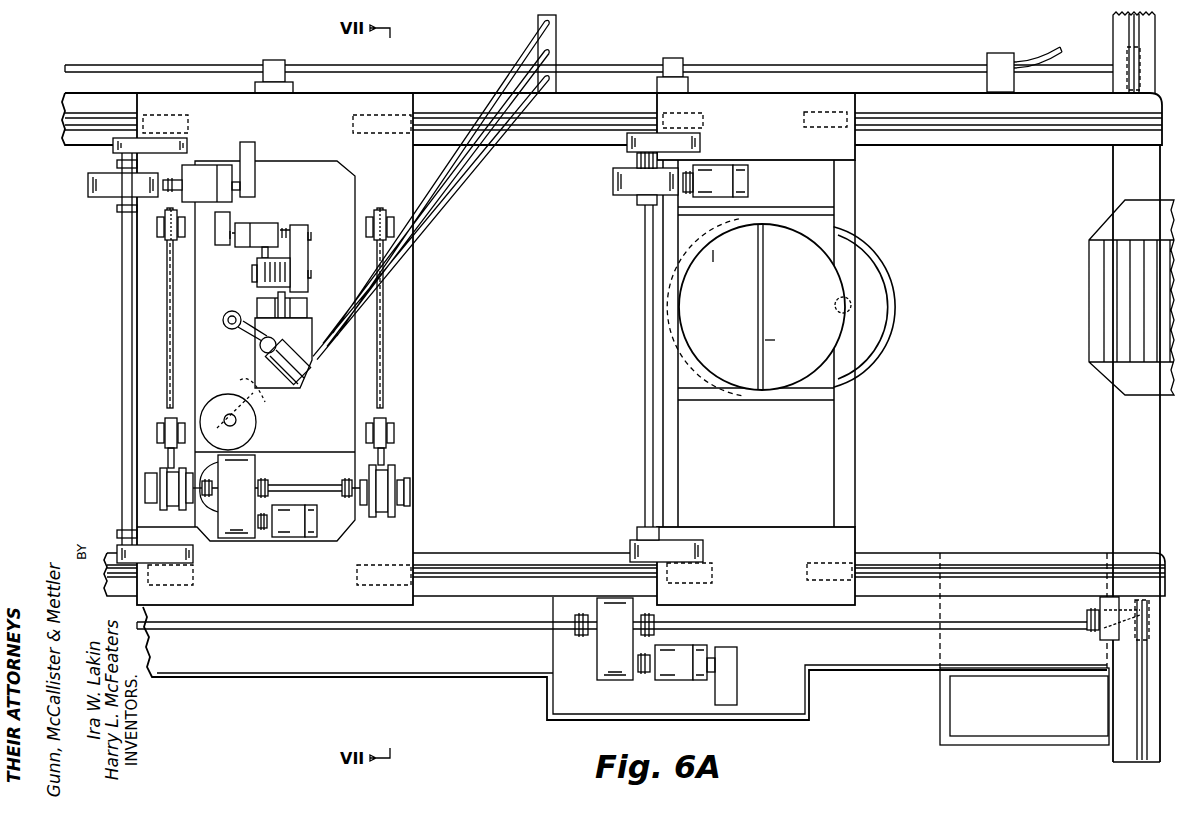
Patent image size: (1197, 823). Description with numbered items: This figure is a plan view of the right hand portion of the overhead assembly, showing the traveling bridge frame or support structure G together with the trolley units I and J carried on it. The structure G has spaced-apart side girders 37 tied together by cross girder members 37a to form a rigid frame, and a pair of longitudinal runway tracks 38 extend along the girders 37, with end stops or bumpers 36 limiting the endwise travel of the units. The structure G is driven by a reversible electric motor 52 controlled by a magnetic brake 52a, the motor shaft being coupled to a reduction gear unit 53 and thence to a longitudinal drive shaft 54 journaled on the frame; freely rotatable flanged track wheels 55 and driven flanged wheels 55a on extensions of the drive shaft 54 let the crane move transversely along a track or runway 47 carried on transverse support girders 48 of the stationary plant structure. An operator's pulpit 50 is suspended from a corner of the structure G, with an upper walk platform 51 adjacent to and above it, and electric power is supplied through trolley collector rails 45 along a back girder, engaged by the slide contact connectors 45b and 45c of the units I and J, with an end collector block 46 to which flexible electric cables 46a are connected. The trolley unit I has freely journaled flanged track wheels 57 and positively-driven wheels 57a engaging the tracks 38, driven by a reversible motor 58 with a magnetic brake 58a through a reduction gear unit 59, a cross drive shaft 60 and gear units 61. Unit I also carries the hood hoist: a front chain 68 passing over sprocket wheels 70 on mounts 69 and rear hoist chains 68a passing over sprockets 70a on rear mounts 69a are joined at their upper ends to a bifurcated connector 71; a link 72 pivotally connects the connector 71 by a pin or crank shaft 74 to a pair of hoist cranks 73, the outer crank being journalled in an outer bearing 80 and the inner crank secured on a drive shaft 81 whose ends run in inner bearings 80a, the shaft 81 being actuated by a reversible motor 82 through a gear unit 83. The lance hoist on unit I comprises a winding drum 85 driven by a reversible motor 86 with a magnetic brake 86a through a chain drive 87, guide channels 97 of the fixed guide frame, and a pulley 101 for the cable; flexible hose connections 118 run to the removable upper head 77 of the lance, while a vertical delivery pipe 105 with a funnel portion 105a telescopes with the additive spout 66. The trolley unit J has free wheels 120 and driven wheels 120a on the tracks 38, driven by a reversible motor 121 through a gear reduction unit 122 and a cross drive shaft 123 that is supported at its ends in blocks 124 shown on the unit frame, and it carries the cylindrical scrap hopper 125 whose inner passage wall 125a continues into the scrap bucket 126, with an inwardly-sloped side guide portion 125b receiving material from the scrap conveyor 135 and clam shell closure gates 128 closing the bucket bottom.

The end stops or bumpers 36 is at (1162, 100).
The girders 37 is at (65, 148).
The cross girder members 37a is at (1113, 456).
The runway tracks 38 is at (543, 135).
The trolley collector rails 45 is at (133, 68).
The electrical slide contact connector 45b is at (283, 62).
The electrical slide contact connector 45c is at (678, 62).
The end collector block 46 is at (993, 55).
The flexible electric cables 46a is at (1043, 57).
The track or runway 47 is at (1128, 28).
The transverse support girders 48 is at (1120, 750).
The operator's pulpit 50 is at (940, 710).
The upper walk platform 51 is at (876, 668).
The reversible electric motor 52 is at (683, 683).
The magnetic brake 52a is at (737, 692).
The reduction gear unit 53 is at (612, 683).
The longitudinal drive shaft 54 is at (433, 630).
The flanged track wheels 55 is at (1127, 55).
The driven flanged wheels 55a is at (1105, 635).
The flanged track wheels 57 is at (353, 118).
The driven flange track wheels 57a is at (190, 116).
The reversible electrical motor 58 is at (208, 170).
The magnetic brake 58a is at (255, 150).
The reduction gear unit 59 is at (88, 197).
The cross drive shaft 60 is at (122, 376).
The gear units or sets 61 is at (113, 150).
The additive spout portion 66 is at (265, 400).
The front chain 68 is at (165, 453).
The rear hoist chains 68a is at (167, 298).
The mounts 69 is at (366, 430).
The rear mounts 69a is at (366, 226).
The sprocket wheels 70 is at (394, 425).
The sprockets 70a is at (392, 198).
The bifurcated connector 71 is at (397, 470).
The link 72 is at (375, 517).
The hoist cranks 73 is at (400, 505).
The pin or crank shaft 74 is at (386, 520).
The removable upper head 77 is at (305, 334).
The outer bearing 80 is at (145, 488).
The inner bearings 80a is at (360, 480).
The drive shaft 81 is at (303, 474).
The reversible motor 82 is at (300, 537).
The gear unit 83 is at (255, 476).
The winding drum 85 is at (262, 286).
The reversible electric motor 86 is at (258, 228).
The magnetic brake 86a is at (222, 242).
The chain drive 87 is at (308, 230).
The guide channels 97 is at (259, 238).
The pulley 101 is at (303, 310).
The vertical feed or delivery pipe 105 is at (223, 414).
The funnel portion 105a is at (255, 430).
The hose connections 118 is at (533, 48).
The flanged track wheels 120 is at (838, 118).
The driven flanged track wheels 120a is at (703, 118).
The reversible electric motor 121 is at (748, 182).
The gear reduction unit 122 is at (613, 180).
The cross drive shaft 123 is at (645, 232).
The bearing block 124 is at (700, 140).
The scrap box or cylindrical hopper 125 is at (713, 262).
The inner passage wall 125a is at (690, 315).
The side guide portion 125b is at (878, 300).
The scrap bucket 126 is at (872, 260).
The clam shell closure gates 128 is at (763, 340).
The scrap conveyor 135 is at (1089, 258).
The trolley unit I is at (415, 349).
The trolley unit J is at (857, 430).
The traveling bridge frame structure G is at (366, 685).